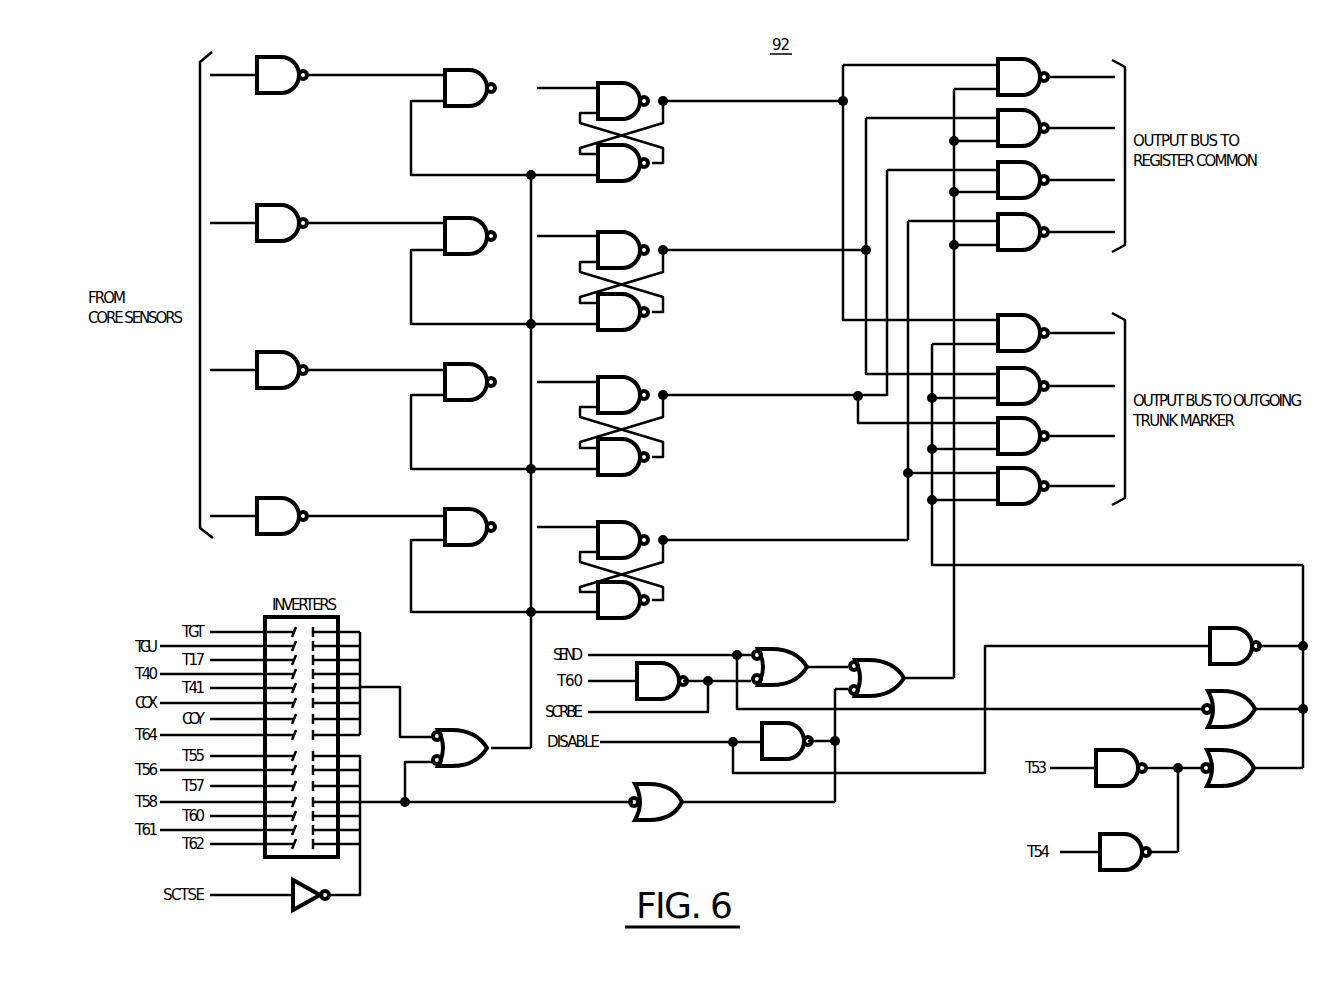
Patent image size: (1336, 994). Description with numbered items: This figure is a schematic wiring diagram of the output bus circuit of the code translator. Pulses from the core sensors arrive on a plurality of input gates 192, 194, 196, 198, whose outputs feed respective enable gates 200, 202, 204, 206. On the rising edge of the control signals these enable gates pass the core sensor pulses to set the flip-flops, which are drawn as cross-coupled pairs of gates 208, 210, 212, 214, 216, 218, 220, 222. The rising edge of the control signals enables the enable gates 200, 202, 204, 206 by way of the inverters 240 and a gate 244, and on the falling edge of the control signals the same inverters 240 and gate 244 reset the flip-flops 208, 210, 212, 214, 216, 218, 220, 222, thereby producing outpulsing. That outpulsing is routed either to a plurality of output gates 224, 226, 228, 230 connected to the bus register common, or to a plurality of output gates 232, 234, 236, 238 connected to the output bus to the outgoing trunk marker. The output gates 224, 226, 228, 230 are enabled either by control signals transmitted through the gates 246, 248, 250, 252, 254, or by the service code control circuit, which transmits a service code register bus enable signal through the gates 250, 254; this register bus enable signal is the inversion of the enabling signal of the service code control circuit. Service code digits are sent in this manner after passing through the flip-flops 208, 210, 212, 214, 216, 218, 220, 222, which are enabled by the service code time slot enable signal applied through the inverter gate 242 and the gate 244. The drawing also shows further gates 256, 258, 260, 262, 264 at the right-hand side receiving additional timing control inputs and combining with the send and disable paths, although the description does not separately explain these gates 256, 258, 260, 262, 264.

The input gate 192 is at (312, 61).
The input gate 194 is at (297, 206).
The input gate 196 is at (300, 351).
The input gate 198 is at (300, 498).
The enable gate 200 is at (485, 72).
The enable gate 202 is at (455, 254).
The enable gate 204 is at (450, 400).
The enable gate 206 is at (452, 545).
The flip-flop 208 is at (638, 85).
The flip-flop 210 is at (640, 180).
The flip-flop 212 is at (648, 235).
The flip-flop 214 is at (648, 328).
The flip-flop 216 is at (648, 379).
The flip-flop 218 is at (648, 473).
The flip-flop 220 is at (648, 524).
The flip-flop 222 is at (648, 615).
The output gate 224 is at (1025, 58).
The output gate 226 is at (1035, 111).
The output gate 228 is at (1035, 163).
The output gate 230 is at (1035, 215).
The output gate 232 is at (1030, 314).
The output gate 234 is at (1035, 368).
The output gate 236 is at (1038, 418).
The output gate 238 is at (1038, 468).
The inverters 240 is at (265, 617).
The gate 242 is at (305, 907).
The gate 244 is at (443, 732).
The gate 246 is at (660, 664).
The gate 248 is at (640, 820).
The gate 250 is at (775, 648).
The gate 252 is at (775, 760).
The gate 254 is at (880, 700).
The NAND gate 256 is at (1215, 630).
The NOR gate 258 is at (1210, 695).
The NOR gate 260 is at (1232, 788).
The NAND gate 262 is at (1112, 750).
The NAND gate 264 is at (1135, 871).